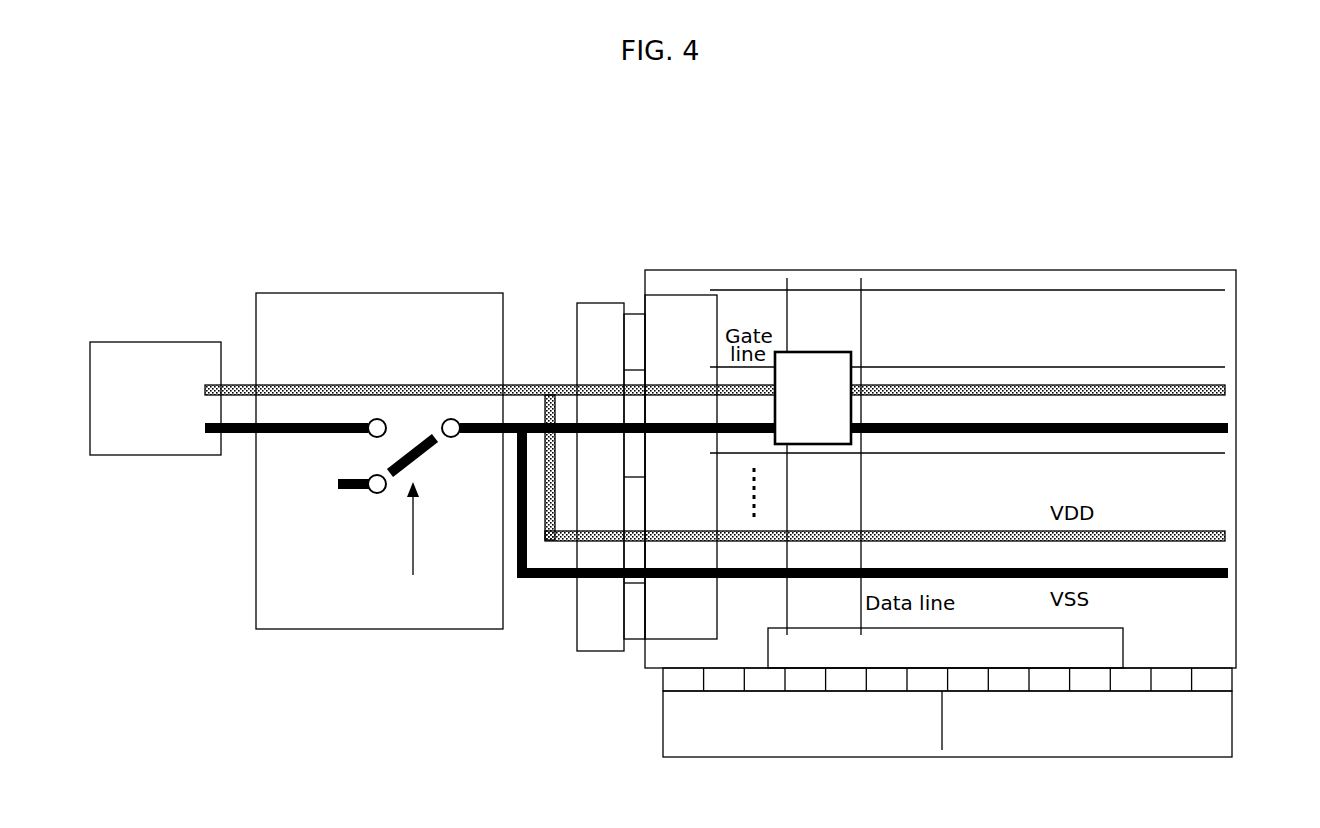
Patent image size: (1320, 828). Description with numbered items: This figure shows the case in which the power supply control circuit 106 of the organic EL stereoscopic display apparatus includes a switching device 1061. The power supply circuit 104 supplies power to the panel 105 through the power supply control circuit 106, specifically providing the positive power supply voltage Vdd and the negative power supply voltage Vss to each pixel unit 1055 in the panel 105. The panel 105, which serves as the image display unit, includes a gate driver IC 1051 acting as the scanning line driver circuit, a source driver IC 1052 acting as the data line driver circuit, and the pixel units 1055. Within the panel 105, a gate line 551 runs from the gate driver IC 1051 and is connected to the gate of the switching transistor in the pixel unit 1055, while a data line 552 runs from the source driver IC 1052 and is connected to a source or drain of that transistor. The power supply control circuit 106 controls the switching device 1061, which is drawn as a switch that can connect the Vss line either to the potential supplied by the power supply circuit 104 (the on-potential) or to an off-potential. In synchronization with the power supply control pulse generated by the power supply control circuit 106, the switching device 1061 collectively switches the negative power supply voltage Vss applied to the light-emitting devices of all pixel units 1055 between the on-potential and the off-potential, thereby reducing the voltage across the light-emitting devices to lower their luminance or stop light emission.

The power supply circuit 104 is at (130, 342).
The power supply control circuit 106 is at (313, 431).
The switching device 1061 is at (378, 455).
The panel 105 is at (973, 270).
The gate driver IC 1051 is at (670, 295).
The source driver IC 1052 is at (1118, 641).
The pixel unit 1055 is at (805, 352).
The gate line 551 is at (1210, 290).
The data line 552 is at (790, 280).